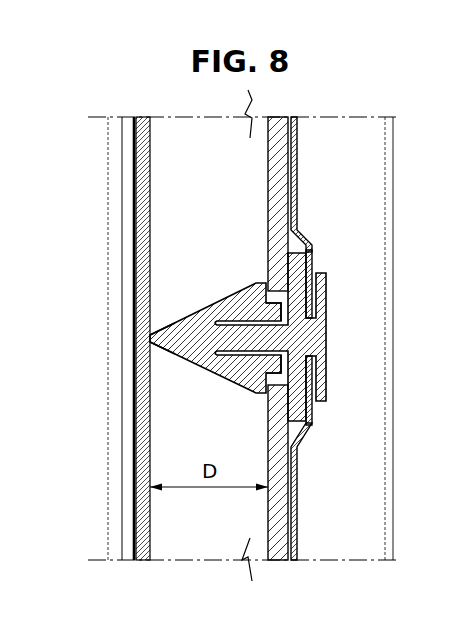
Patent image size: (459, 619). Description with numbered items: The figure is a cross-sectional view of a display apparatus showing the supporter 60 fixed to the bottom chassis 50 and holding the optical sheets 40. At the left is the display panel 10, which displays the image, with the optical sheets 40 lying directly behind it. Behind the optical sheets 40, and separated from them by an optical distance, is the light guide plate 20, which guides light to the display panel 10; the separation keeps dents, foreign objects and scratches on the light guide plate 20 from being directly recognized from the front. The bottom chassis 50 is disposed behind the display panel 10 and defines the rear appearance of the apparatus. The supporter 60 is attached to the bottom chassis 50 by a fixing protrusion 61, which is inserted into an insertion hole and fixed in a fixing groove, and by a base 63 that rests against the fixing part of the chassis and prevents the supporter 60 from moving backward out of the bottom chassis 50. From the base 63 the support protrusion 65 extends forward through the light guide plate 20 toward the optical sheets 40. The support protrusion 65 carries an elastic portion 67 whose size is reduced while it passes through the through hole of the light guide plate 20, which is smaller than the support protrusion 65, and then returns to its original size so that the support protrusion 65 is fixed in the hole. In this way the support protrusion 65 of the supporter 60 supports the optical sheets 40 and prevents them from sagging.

The display panel 10 is at (121, 197).
The light guide plate 20 is at (255, 230).
The optical sheets 40 is at (164, 197).
The bottom chassis 50 is at (335, 338).
The supporter 60 is at (196, 330).
The fixing protrusion 61 is at (323, 379).
The base 63 is at (313, 406).
The support protrusion 65 is at (175, 335).
The elastic portion 67 is at (252, 377).